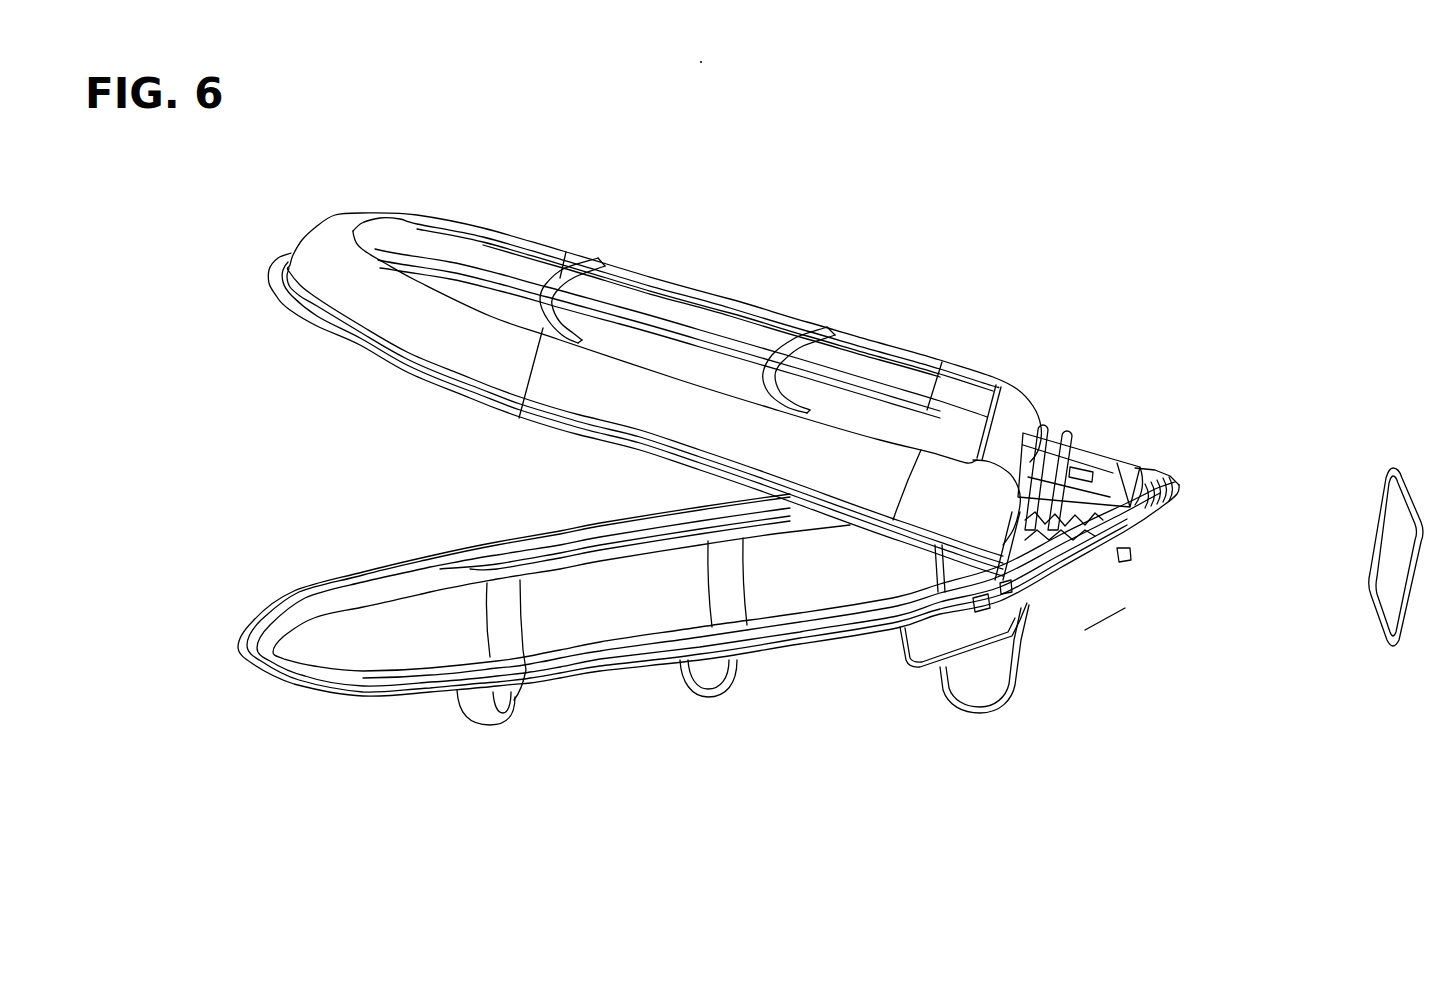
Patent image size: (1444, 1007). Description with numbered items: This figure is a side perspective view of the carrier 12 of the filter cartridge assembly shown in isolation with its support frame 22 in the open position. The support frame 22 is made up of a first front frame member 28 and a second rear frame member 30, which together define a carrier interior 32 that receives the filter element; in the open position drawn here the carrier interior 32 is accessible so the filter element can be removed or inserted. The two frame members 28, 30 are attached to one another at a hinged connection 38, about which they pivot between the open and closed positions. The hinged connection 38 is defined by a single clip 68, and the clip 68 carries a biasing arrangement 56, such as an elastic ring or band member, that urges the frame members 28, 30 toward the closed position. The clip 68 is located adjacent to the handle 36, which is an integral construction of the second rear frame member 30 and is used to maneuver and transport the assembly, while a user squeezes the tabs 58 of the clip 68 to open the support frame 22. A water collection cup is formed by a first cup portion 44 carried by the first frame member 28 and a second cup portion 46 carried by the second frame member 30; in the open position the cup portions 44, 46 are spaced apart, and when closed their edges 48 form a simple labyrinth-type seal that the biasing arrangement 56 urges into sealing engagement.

The carrier 12 is at (333, 170).
The support frame 22 is at (650, 240).
The first front frame member 28 is at (837, 333).
The second rear frame member 30 is at (608, 670).
The carrier interior 32 is at (505, 513).
The handle 36 is at (1165, 480).
The hinged connection 38 is at (1068, 395).
The first cup portion 44 is at (1007, 407).
The second cup portion 46 is at (924, 653).
The edges 48 is at (887, 600).
The biasing arrangement 56 is at (1375, 458).
The tabs 58 is at (1120, 457).
The clip 68 is at (1115, 630).